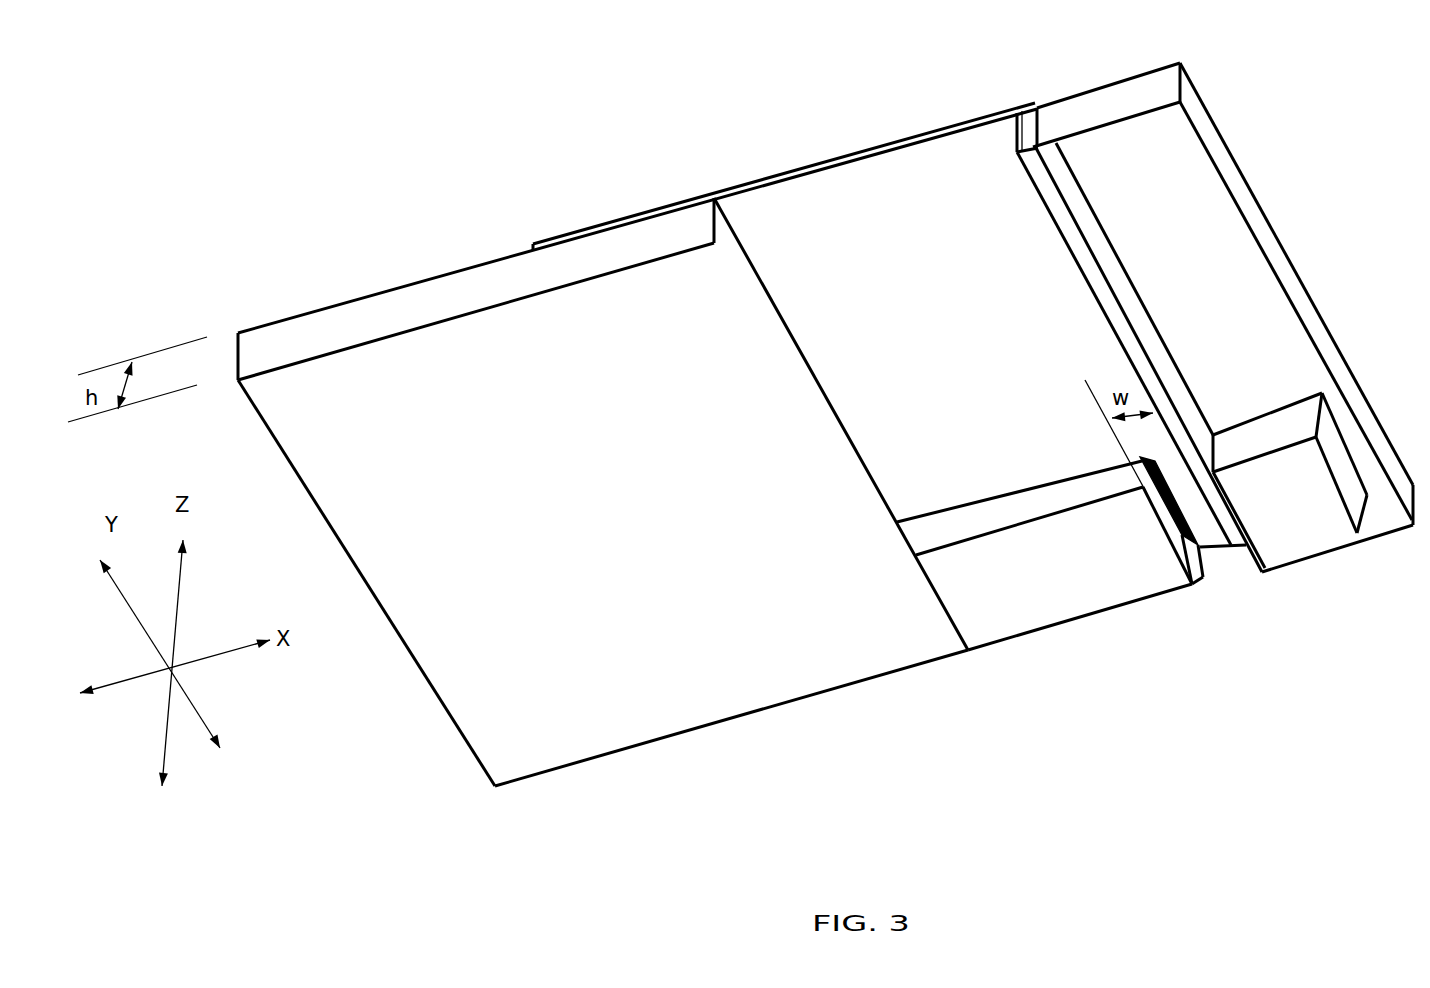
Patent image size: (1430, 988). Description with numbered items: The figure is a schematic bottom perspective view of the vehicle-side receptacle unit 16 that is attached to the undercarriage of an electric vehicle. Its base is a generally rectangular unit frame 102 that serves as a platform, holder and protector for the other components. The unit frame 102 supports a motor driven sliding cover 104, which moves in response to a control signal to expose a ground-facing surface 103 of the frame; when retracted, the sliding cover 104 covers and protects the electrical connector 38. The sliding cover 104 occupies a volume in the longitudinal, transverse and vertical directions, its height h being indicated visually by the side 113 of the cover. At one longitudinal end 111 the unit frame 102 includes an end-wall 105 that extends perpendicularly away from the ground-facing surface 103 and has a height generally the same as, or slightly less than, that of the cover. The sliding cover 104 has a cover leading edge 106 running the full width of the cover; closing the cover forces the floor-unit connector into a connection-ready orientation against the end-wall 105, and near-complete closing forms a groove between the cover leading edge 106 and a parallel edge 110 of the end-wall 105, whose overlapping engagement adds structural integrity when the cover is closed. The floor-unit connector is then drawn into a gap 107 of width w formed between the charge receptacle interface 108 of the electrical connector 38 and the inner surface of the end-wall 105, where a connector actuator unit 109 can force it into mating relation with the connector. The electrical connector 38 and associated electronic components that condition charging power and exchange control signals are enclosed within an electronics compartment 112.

The vehicle-side receptacle unit 16 is at (492, 152).
The electrical connector 38 is at (1290, 480).
The unit frame 102 is at (888, 137).
The ground-facing surface 103 is at (844, 424).
The sliding cover 104 is at (546, 662).
The end-wall 105 is at (1057, 240).
The cover leading edge 106 is at (731, 242).
The gap 107 is at (1226, 590).
The charge receptacle interface 108 is at (1195, 588).
The connector actuator unit 109 is at (1044, 555).
The parallel edge 110 is at (1043, 183).
The longitudinal end 111 is at (1012, 108).
The electronics compartment 112 is at (1223, 317).
The side 113 is at (637, 244).